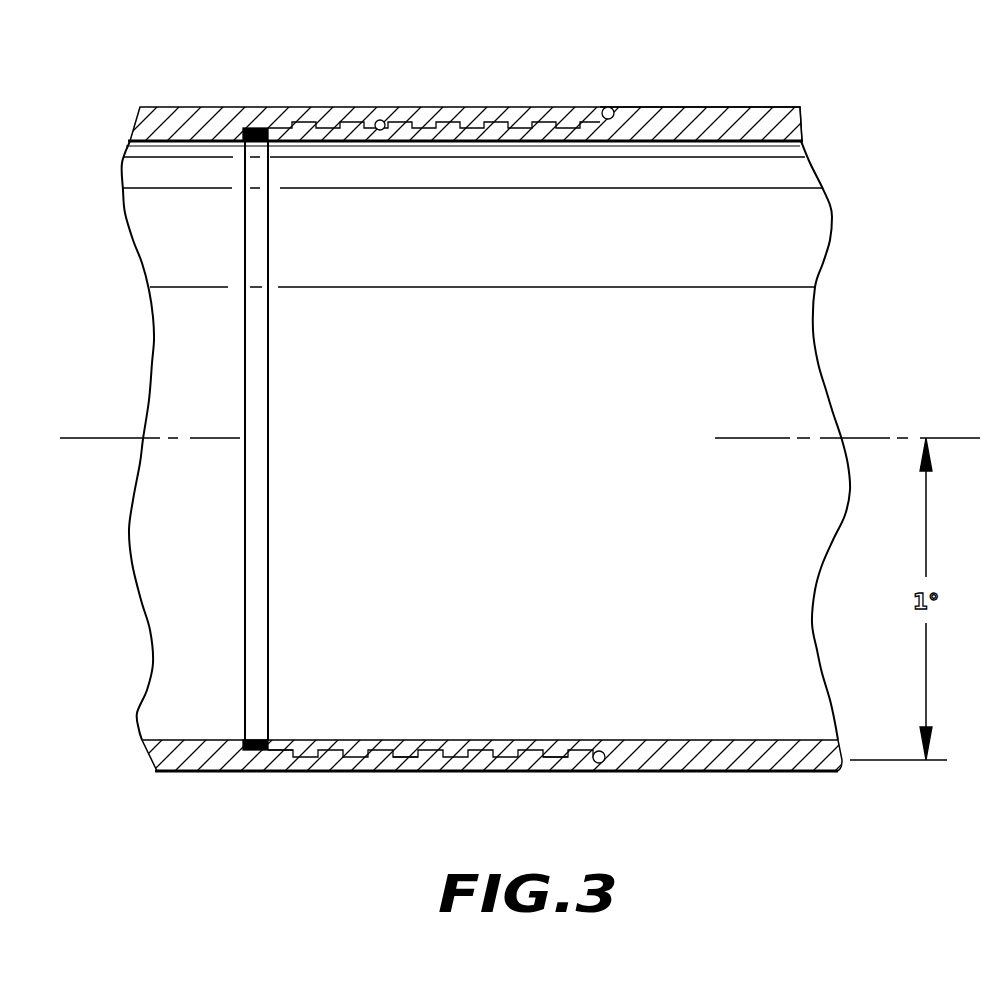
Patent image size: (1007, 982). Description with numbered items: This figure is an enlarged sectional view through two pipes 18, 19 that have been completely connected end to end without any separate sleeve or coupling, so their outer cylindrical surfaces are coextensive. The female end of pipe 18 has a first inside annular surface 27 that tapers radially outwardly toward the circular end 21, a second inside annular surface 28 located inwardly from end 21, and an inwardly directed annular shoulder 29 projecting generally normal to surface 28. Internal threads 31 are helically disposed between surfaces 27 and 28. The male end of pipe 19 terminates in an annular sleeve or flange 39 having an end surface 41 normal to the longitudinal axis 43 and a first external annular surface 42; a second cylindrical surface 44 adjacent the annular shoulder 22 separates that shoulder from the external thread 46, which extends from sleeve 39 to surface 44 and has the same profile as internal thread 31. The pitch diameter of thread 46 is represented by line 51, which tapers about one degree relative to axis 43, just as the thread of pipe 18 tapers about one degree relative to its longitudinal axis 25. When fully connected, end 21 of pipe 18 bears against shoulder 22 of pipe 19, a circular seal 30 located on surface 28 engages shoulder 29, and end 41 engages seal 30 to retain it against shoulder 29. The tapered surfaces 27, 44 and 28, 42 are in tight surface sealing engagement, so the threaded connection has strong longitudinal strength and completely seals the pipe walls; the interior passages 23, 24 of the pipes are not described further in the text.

The pipe 18 is at (180, 118).
The pipe 19 is at (760, 120).
The end 21 is at (593, 110).
The annular shoulder 22 is at (623, 110).
The first conduit passage 23 is at (174, 353).
The second conduit passage 24 is at (548, 353).
The longitudinal axis 25 is at (90, 437).
The first inside annular surface 27 is at (568, 760).
The second inside annular surface 28 is at (293, 128).
The annular shoulder 29 is at (385, 122).
The circular seal 30 is at (248, 740).
The internal threads 31 is at (417, 757).
The annular sleeve or flange 39 is at (288, 132).
The end surface 41 is at (270, 525).
The first external annular surface 42 is at (284, 743).
The longitudinal axis 43 is at (948, 437).
The second cylindrical surface 44 is at (612, 760).
The external thread 46 is at (490, 752).
The pitch diameter line 51 is at (890, 761).